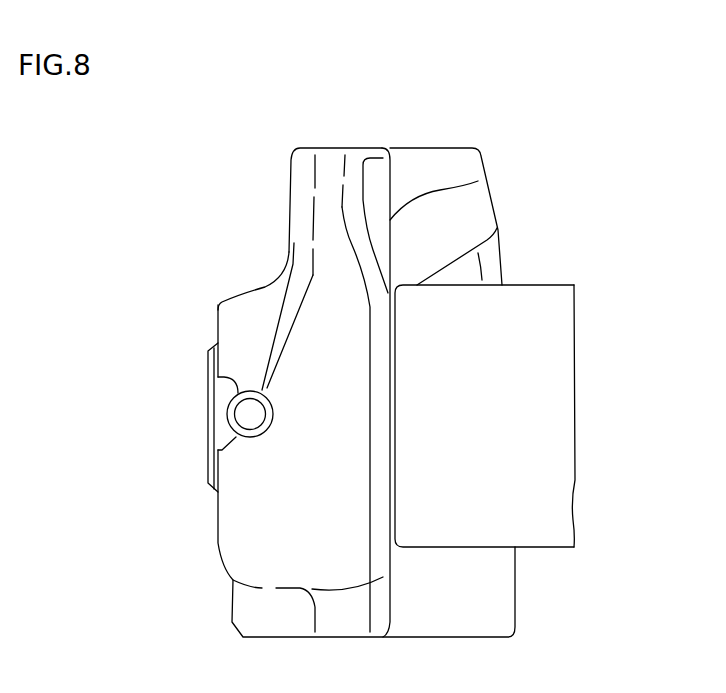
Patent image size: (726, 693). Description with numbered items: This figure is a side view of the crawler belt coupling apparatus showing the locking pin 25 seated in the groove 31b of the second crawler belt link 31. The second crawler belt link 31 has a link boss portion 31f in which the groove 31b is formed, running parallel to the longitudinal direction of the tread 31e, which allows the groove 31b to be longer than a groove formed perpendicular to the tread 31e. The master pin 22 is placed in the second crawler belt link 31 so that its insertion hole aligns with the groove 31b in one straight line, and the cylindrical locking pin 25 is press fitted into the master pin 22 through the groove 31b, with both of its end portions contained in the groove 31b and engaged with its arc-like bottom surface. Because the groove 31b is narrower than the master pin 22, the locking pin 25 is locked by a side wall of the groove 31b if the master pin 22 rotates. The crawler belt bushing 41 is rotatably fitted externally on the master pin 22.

The second crawler belt link 31 is at (328, 170).
The tread 31e is at (360, 148).
The link boss portion 31f is at (240, 310).
The groove 31b is at (237, 374).
The master pin 22 is at (222, 393).
The locking pin 25 is at (245, 418).
The crawler belt bushing 41 is at (537, 310).